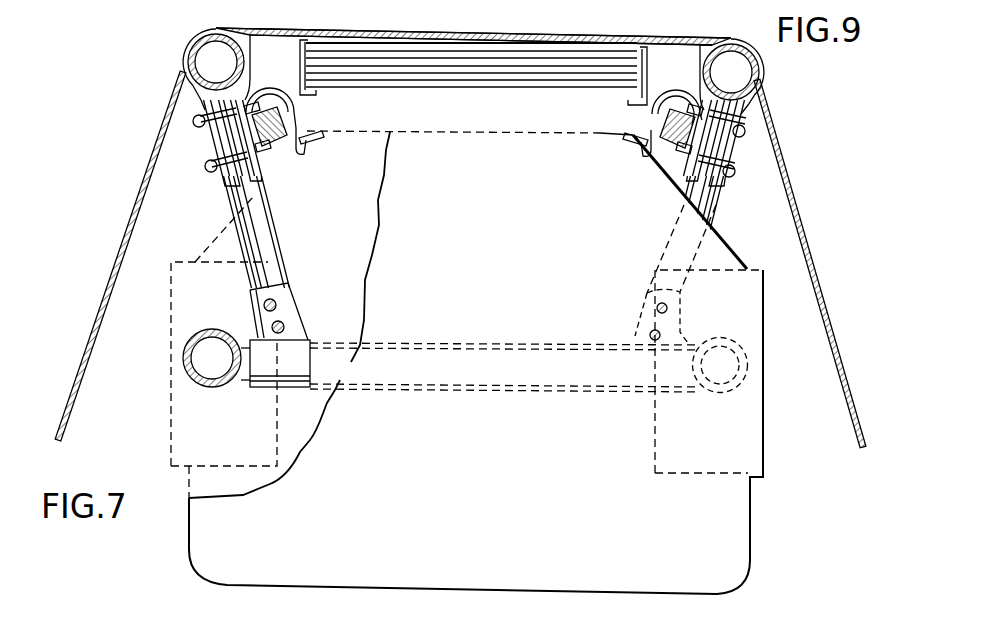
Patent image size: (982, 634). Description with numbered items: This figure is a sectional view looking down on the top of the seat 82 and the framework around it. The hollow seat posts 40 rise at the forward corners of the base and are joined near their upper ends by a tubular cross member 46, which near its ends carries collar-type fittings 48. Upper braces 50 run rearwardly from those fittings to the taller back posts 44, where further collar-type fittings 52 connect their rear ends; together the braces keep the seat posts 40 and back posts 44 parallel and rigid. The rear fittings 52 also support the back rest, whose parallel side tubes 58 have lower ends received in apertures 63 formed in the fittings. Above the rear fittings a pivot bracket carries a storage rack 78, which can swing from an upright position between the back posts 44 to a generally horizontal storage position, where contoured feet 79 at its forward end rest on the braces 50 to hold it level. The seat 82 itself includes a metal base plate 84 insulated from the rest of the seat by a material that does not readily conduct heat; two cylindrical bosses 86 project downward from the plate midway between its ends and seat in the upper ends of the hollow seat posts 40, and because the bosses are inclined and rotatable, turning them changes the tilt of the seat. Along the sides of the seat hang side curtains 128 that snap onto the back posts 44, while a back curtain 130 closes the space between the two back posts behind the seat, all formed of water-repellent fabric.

The seat post 40 is at (185, 370).
The back post 44 is at (183, 72).
The tubular cross member 46 is at (340, 380).
The collar-type fitting 48 is at (297, 330).
The upper brace 50 is at (267, 240).
The rear collar-type fitting 52 is at (215, 145).
The side tube 58 is at (290, 127).
The aperture 63 is at (283, 150).
The storage rack 78 is at (473, 22).
The contoured foot 79 is at (263, 88).
The seat 82 is at (540, 529).
The metal base plate 84 is at (185, 310).
The cylindrical boss 86 is at (217, 368).
The side curtain 128 is at (128, 226).
The back curtain 130 is at (442, 13).